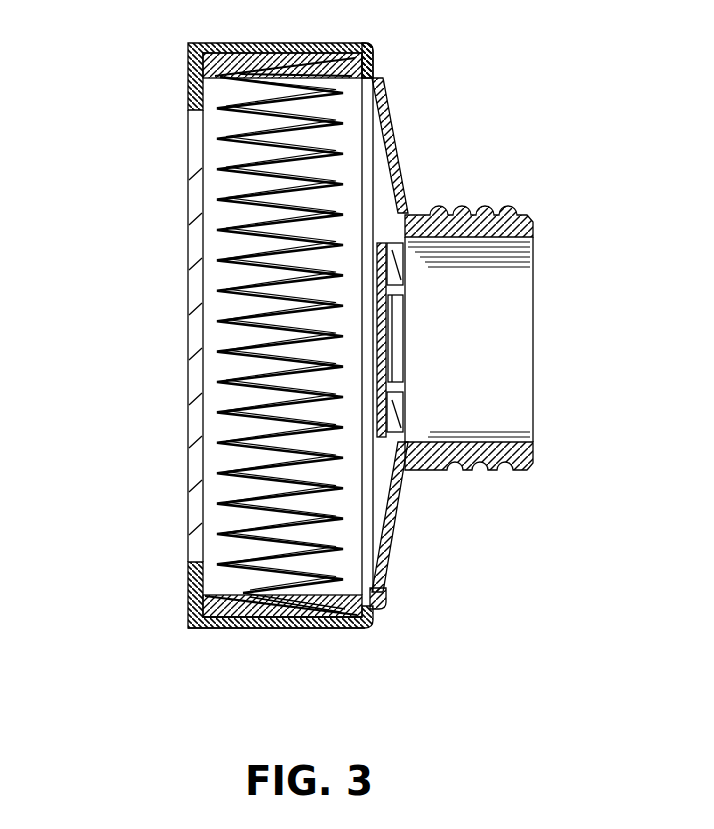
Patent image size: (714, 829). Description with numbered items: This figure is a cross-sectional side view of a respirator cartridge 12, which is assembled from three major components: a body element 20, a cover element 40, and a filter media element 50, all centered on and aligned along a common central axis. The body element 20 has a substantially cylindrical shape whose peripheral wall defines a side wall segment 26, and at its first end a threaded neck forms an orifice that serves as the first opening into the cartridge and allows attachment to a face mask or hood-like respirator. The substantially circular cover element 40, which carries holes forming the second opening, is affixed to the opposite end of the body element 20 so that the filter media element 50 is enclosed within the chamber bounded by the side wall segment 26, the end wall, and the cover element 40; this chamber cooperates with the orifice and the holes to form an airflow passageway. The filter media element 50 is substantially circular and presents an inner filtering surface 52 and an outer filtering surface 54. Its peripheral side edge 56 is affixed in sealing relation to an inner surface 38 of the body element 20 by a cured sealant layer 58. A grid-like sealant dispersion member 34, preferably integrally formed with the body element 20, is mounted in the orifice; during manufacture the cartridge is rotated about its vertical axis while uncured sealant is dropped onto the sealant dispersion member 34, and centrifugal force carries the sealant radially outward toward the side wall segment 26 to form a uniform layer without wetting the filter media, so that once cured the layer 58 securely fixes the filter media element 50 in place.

The respirator cartridge 12 is at (125, 133).
The body element 20 is at (396, 108).
The side wall segment 26 is at (292, 629).
The sealant dispersion member 34 is at (388, 333).
The inner surface 38 is at (378, 606).
The cover element 40 is at (186, 57).
The filter media element 50 is at (222, 230).
The inner filtering surface 52 is at (225, 381).
The outer filtering surface 54 is at (320, 543).
The peripheral side edge 56 is at (243, 592).
The cured sealant layer 58 is at (368, 47).